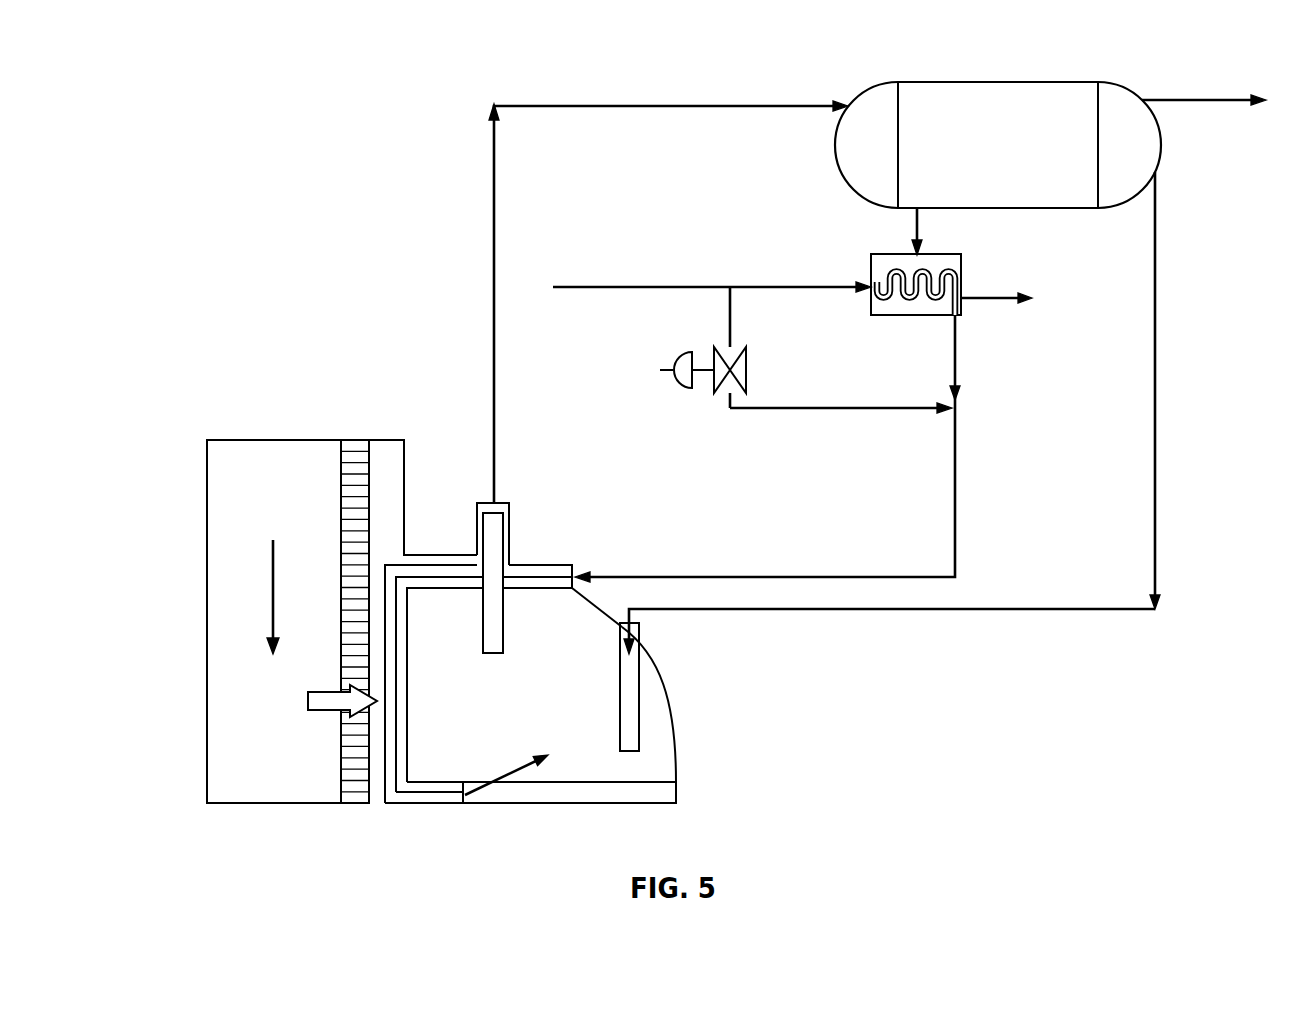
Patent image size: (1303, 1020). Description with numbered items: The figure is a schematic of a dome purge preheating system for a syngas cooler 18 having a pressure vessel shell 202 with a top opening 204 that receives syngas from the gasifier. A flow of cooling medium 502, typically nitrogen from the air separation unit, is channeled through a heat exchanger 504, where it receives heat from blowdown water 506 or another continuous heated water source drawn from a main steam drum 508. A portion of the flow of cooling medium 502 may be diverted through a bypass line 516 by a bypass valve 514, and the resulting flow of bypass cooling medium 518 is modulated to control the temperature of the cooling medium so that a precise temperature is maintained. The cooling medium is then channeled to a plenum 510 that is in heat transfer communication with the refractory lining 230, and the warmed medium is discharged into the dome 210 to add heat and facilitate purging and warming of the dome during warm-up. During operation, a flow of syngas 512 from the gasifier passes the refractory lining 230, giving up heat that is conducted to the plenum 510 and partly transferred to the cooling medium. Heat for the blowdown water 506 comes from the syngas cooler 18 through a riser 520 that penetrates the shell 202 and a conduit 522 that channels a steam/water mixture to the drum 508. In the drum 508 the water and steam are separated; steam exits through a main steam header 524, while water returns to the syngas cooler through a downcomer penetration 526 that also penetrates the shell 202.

The syngas cooler 18 is at (400, 367).
The pressure vessel shell 202 is at (668, 715).
The top opening 204 is at (250, 430).
The dome 210 is at (580, 721).
The refractory lining 230 is at (359, 439).
The flow of cooling medium 502 is at (581, 286).
The heat exchanger 504 is at (870, 262).
The blowdown water 506 is at (919, 223).
The main steam drum 508 is at (1038, 81).
The plenum 510 is at (397, 775).
The flow of syngas 512 is at (273, 597).
The bypass valve 514 is at (741, 374).
The bypass line 516 is at (825, 410).
The flow of bypass cooling medium 518 is at (927, 410).
The riser 520 is at (498, 503).
The conduit 522 is at (493, 285).
The main steam header 524 is at (1185, 100).
The downcomer penetration 526 is at (640, 638).